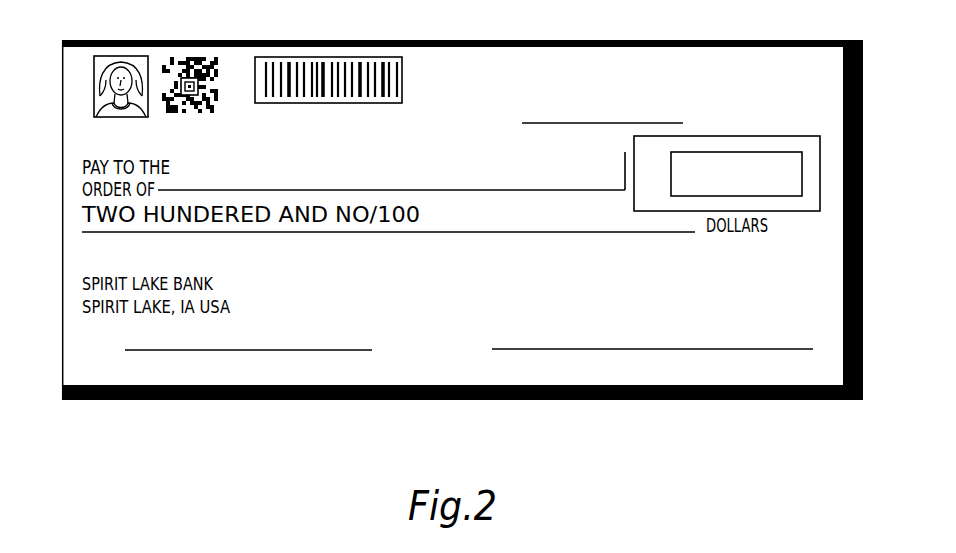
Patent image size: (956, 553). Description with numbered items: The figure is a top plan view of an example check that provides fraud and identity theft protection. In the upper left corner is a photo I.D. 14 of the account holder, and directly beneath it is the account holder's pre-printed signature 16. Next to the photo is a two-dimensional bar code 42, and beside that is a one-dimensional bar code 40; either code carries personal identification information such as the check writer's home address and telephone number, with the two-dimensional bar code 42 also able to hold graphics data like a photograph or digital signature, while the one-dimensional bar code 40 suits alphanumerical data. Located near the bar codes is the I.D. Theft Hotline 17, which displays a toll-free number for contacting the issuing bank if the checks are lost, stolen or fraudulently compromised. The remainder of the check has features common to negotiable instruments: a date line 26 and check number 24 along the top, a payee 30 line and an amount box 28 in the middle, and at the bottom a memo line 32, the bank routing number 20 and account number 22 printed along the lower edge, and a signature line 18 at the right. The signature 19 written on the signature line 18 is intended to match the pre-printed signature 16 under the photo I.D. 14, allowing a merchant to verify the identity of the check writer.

The photo I.D. 14 is at (116, 62).
The pre-printed signature 16 is at (76, 128).
The I.D. Theft Hotline 17 is at (401, 119).
The signature line 18 is at (770, 348).
The signature 19 is at (528, 332).
The bank routing number 20 is at (128, 365).
The account number 22 is at (318, 362).
The check number 24 is at (785, 70).
The date line 26 is at (636, 121).
The amount box 28 is at (723, 160).
The payee 30 is at (498, 186).
The memo line 32 is at (248, 351).
The 1-D bar code 40 is at (341, 62).
The 2-D bar code 42 is at (182, 58).